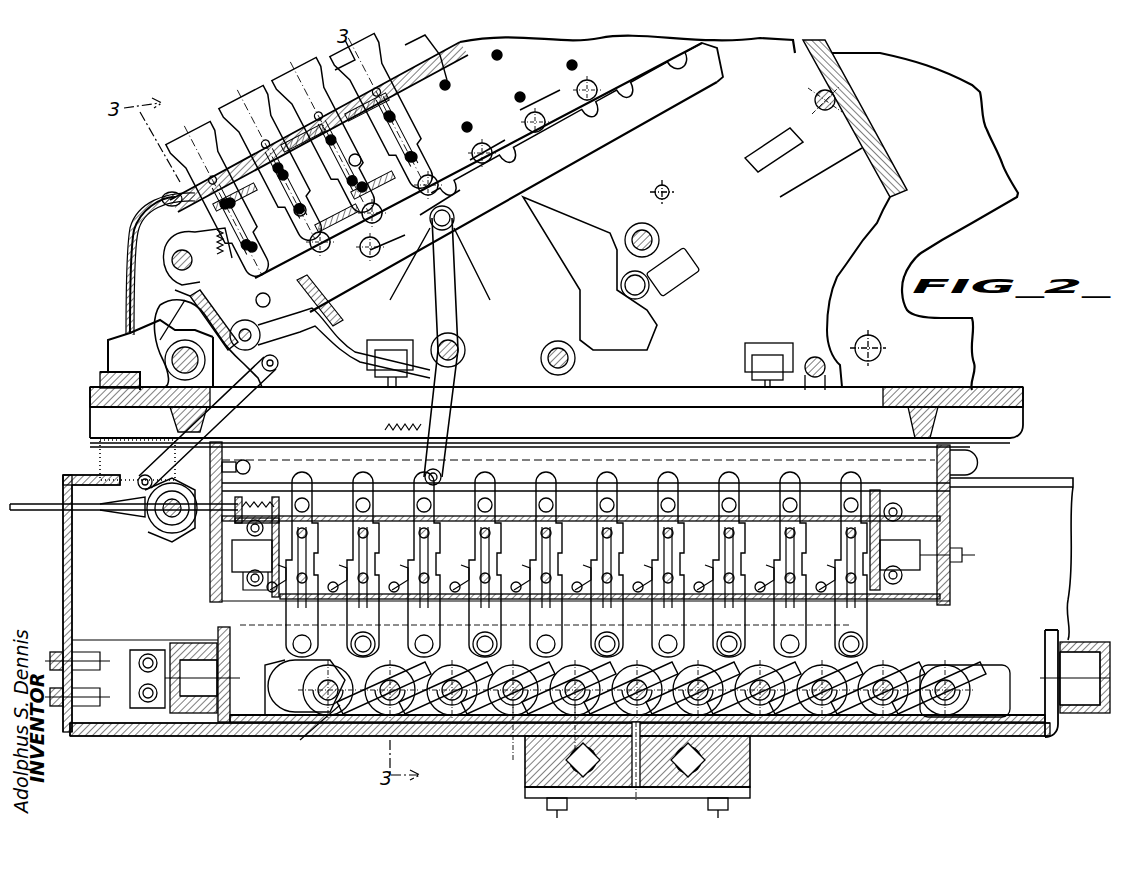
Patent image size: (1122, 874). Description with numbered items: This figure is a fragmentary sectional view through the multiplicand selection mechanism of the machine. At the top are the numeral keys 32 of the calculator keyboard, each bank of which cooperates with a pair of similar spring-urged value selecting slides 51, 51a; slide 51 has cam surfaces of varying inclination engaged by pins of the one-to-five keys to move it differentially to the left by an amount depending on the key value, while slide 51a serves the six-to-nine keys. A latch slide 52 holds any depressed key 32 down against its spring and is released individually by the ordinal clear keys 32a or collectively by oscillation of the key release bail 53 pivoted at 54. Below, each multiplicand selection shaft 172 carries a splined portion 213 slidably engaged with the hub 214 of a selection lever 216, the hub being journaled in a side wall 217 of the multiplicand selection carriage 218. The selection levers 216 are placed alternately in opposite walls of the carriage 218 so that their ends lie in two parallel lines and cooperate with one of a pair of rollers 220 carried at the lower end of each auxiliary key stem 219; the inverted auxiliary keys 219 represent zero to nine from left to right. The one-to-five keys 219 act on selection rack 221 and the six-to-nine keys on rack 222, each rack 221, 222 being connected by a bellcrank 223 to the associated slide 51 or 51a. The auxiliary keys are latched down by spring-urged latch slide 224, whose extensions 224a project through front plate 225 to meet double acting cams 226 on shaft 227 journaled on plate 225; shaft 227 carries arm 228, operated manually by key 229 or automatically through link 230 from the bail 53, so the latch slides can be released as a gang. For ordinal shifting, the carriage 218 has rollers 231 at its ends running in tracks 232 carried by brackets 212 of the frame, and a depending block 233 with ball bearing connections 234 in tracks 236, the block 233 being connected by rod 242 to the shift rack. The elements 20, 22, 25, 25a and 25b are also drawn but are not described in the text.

The cable 20 is at (128, 230).
The plate 22 is at (1052, 478).
The frame plate 25 is at (128, 283).
The frame rail 25a is at (998, 398).
The frame portion 25b is at (100, 450).
The numeral keys 32 is at (278, 72).
The ordinal clear keys 32a is at (210, 118).
The value selecting slide 51 is at (700, 92).
The value selecting slide 51a is at (597, 150).
The latch slide 52 is at (212, 232).
The key release bail 53 is at (192, 310).
The pivot 54 is at (252, 326).
The multiplicand selection shaft 172 is at (455, 712).
The brackets 212 is at (988, 648).
The splined portion 213 is at (372, 712).
The hub 214 is at (440, 712).
The selection lever 216 is at (310, 712).
The side wall 217 is at (1008, 680).
The multiplicand selection carriage 218 is at (268, 738).
The auxiliary key stem 219 is at (545, 624).
The rollers 220 is at (310, 650).
The selection rack 221 is at (553, 452).
The selection rack 222 is at (632, 455).
The bellcrank 223 is at (450, 425).
The latch slide 224 is at (330, 530).
The extensions 224a is at (235, 498).
The front plate 225 is at (210, 585).
The double acting cams 226 is at (160, 530).
The shaft 227 is at (155, 518).
The arm 228 is at (101, 514).
The key 229 is at (27, 500).
The link 230 is at (210, 412).
The rollers 231 is at (205, 713).
The tracks 232 is at (170, 715).
The depending block 233 is at (670, 790).
The ball bearing connections 234 is at (588, 787).
The tracks 236 is at (525, 773).
The rod 242 is at (633, 790).